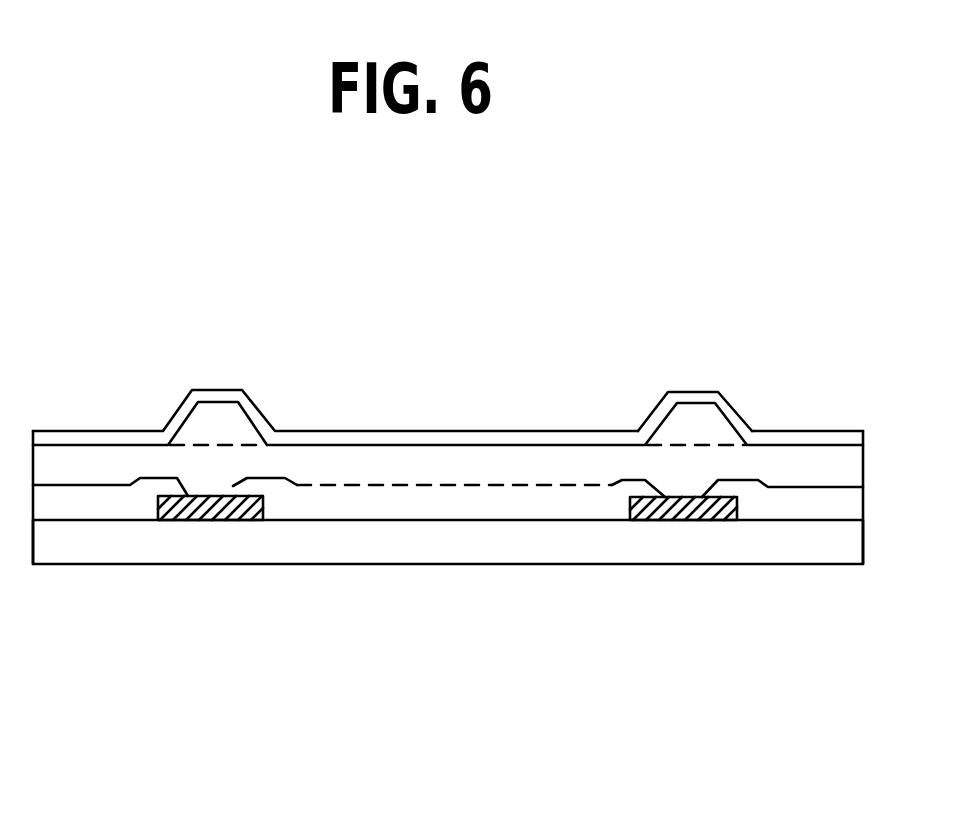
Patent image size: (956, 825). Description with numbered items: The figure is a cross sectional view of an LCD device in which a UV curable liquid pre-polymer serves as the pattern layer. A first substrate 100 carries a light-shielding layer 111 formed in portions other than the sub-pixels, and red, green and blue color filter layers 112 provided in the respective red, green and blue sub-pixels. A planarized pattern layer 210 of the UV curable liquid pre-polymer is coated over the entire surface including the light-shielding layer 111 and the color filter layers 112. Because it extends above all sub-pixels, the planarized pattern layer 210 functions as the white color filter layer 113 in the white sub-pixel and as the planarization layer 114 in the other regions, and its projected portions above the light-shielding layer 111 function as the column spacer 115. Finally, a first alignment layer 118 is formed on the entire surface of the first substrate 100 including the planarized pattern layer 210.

The first substrate 100 is at (490, 542).
The light-shielding layer 111 is at (225, 508).
The red, green and blue color filter layers 112 is at (90, 502).
The white color filter layer 113 is at (470, 500).
The planarization layer 114 is at (390, 468).
The column spacer 115 is at (240, 432).
The first alignment layer 118 is at (733, 415).
The planarized pattern layer 210 is at (482, 330).